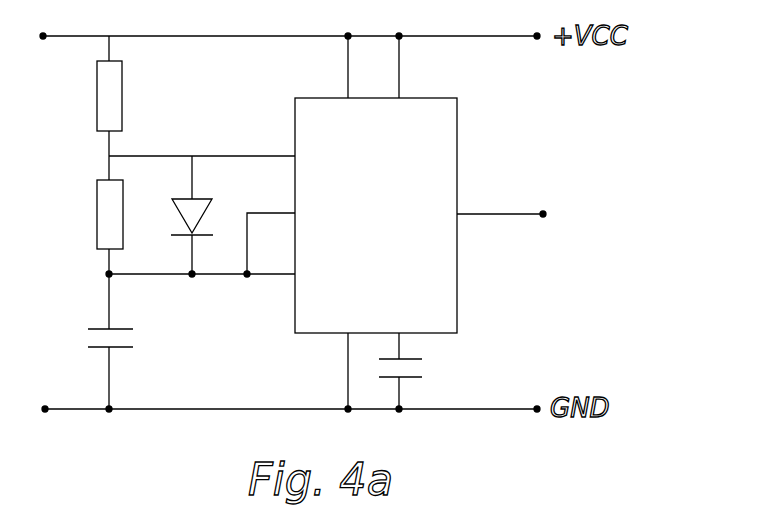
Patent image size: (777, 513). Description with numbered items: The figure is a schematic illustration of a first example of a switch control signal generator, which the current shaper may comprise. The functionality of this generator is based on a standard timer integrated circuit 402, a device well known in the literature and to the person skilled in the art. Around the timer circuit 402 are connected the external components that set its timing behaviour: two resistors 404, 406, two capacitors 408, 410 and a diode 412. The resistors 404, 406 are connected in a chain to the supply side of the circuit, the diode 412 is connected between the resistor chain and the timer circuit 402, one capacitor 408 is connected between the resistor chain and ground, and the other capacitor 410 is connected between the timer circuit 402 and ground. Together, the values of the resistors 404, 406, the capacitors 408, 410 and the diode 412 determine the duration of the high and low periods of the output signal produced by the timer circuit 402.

The timer integrated circuit 402 is at (310, 117).
The resistor 404 is at (108, 100).
The resistor 406 is at (106, 209).
The capacitor 408 is at (127, 338).
The capacitor 410 is at (413, 370).
The diode 412 is at (199, 208).